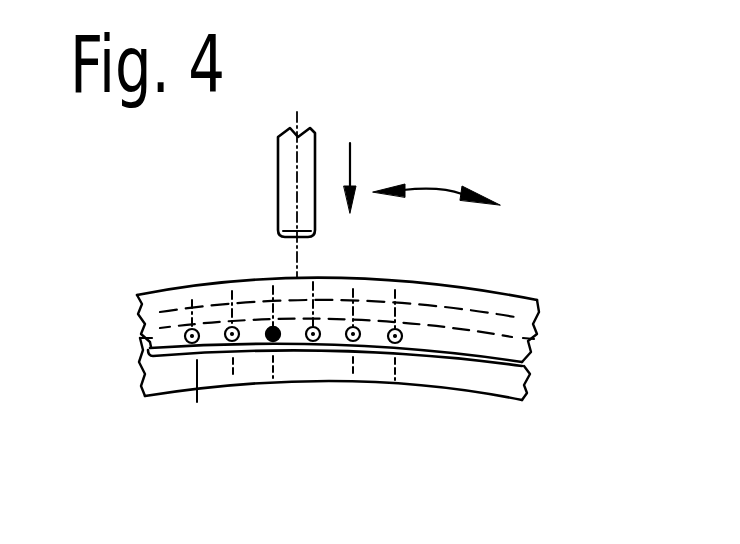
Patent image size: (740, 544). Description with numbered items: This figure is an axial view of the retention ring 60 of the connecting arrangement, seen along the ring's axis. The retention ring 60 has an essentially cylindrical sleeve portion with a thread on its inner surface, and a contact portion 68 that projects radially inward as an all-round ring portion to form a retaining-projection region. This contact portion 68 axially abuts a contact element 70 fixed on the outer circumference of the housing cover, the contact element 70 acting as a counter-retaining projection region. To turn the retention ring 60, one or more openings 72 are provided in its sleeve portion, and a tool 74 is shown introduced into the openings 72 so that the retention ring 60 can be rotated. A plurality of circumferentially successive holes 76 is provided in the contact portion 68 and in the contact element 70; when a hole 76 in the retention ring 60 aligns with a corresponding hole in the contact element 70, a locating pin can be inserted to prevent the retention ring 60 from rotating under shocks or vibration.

The retention ring 60 is at (512, 300).
The contact portion 68 is at (527, 345).
The contact element 70 is at (527, 393).
The openings 72 is at (253, 292).
The tool 74 is at (311, 146).
The holes 76 is at (313, 342).